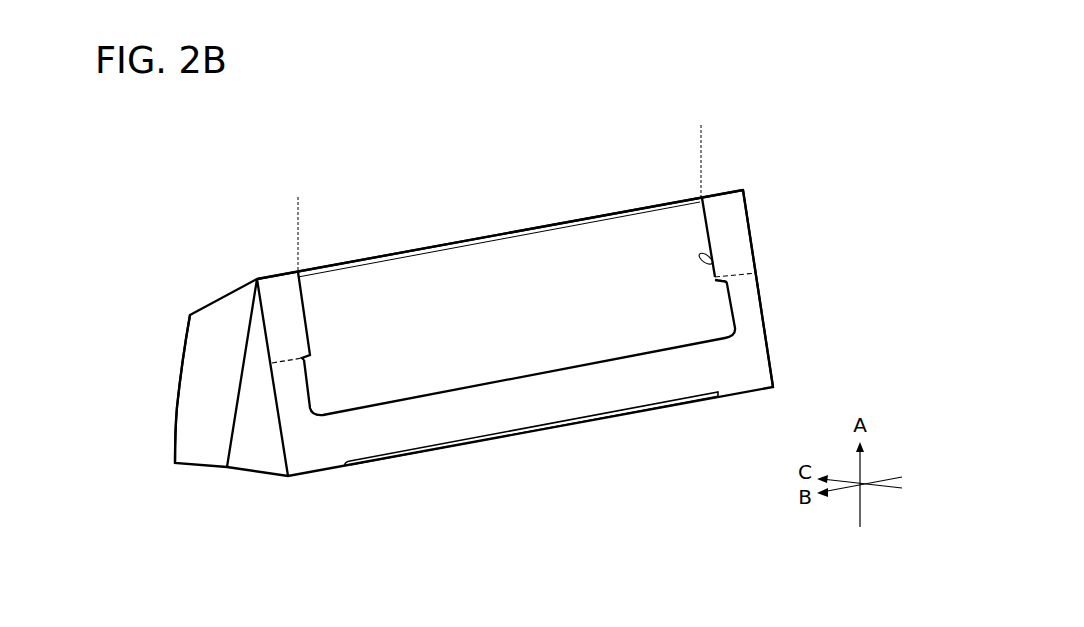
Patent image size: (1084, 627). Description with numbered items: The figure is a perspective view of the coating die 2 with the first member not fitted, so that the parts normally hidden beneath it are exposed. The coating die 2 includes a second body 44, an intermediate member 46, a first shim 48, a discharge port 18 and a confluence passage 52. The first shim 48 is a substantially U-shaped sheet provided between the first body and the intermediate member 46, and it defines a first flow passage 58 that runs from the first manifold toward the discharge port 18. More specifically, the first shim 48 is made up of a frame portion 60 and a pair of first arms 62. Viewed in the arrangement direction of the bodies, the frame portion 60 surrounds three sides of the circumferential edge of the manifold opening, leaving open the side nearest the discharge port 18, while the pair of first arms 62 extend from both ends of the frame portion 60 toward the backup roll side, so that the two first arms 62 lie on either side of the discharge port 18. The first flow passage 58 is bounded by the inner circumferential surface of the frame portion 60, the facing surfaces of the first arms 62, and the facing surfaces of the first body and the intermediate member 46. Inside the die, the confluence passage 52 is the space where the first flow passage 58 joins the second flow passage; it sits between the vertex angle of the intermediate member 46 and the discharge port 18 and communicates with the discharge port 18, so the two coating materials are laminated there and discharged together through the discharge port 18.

The coating die 2 is at (495, 585).
The discharge port 18 is at (302, 223).
The second body 44 is at (180, 373).
The intermediate member 46 is at (257, 460).
The first shim 48 is at (764, 389).
The confluence passage 52 is at (668, 200).
The first flow passage 58 is at (713, 262).
The frame portion 60 is at (760, 360).
The first arms 62 is at (277, 298).